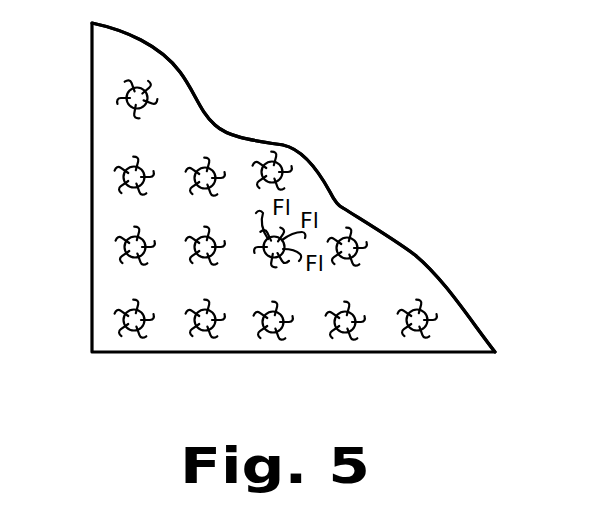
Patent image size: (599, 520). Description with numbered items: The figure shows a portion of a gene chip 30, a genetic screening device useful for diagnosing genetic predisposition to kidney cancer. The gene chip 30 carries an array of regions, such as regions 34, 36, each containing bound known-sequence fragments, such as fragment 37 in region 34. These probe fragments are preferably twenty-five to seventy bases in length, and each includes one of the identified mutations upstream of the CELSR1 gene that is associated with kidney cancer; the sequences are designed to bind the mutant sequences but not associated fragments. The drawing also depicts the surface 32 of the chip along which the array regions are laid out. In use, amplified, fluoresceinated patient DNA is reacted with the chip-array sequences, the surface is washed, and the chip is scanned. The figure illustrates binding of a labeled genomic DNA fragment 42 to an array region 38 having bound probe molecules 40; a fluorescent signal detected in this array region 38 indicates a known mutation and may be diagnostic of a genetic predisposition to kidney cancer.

The gene chip 30 is at (219, 127).
The surface 32 is at (180, 78).
The region 34 is at (80, 98).
The region 36 is at (122, 182).
The fragment 37 is at (147, 82).
The array region 38 is at (276, 304).
The probe molecules 40 is at (262, 250).
The labeled genomic DNA fragment 42 is at (292, 256).